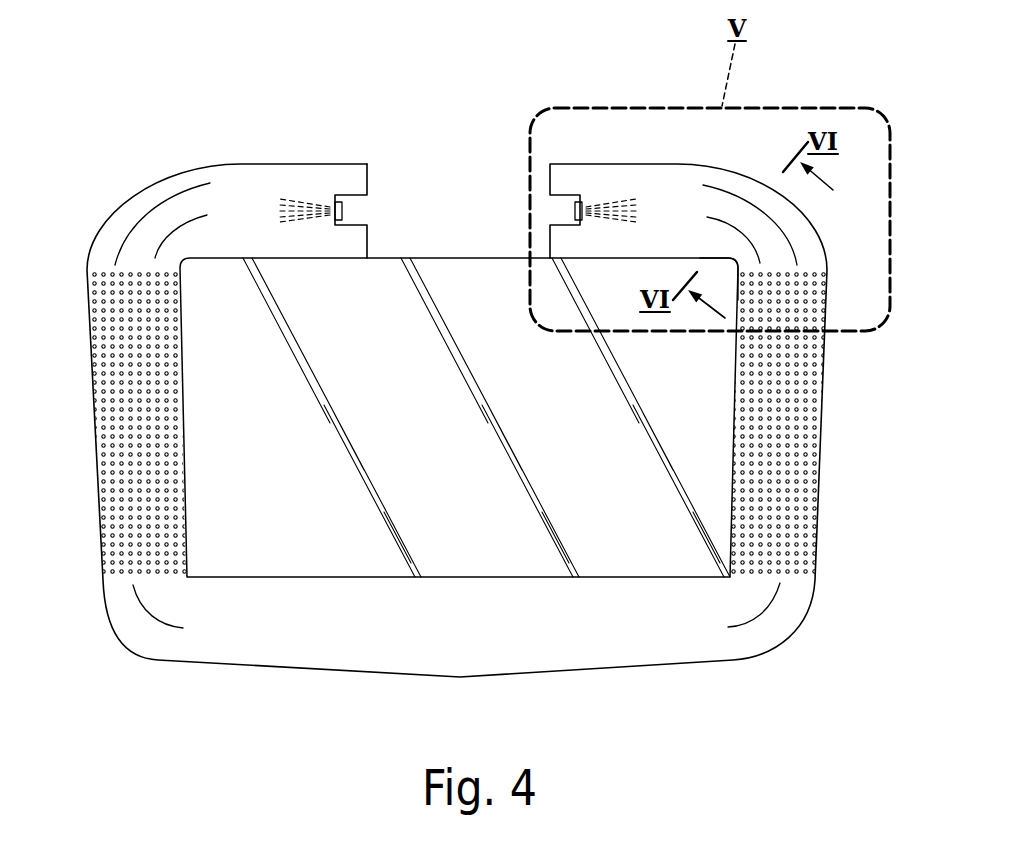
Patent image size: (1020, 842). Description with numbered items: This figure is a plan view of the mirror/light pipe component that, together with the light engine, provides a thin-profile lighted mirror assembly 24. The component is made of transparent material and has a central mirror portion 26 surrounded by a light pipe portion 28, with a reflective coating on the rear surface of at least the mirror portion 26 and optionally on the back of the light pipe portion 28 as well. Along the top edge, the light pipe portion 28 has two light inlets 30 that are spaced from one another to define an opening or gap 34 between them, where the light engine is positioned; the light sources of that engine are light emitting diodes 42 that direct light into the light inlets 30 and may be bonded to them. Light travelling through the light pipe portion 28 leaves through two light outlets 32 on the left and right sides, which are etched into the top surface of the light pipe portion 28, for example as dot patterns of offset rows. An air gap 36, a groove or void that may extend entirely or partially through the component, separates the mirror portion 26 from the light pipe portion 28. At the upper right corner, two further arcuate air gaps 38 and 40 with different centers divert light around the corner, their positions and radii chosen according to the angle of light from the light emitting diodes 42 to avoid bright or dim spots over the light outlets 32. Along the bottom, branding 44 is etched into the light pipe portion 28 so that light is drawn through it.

The lighted mirror assembly 24 is at (493, 112).
The mirror portion 26 is at (718, 525).
The light pipe portion 28 is at (838, 420).
The light inlets 30 is at (334, 201).
The light outlets 32 is at (140, 427).
The opening or gap 34 is at (443, 202).
The air gap 36 is at (597, 258).
The air gap 38 is at (782, 237).
The air gap 40 is at (748, 247).
The light emitting diodes 42 is at (343, 212).
The branding 44 is at (405, 645).